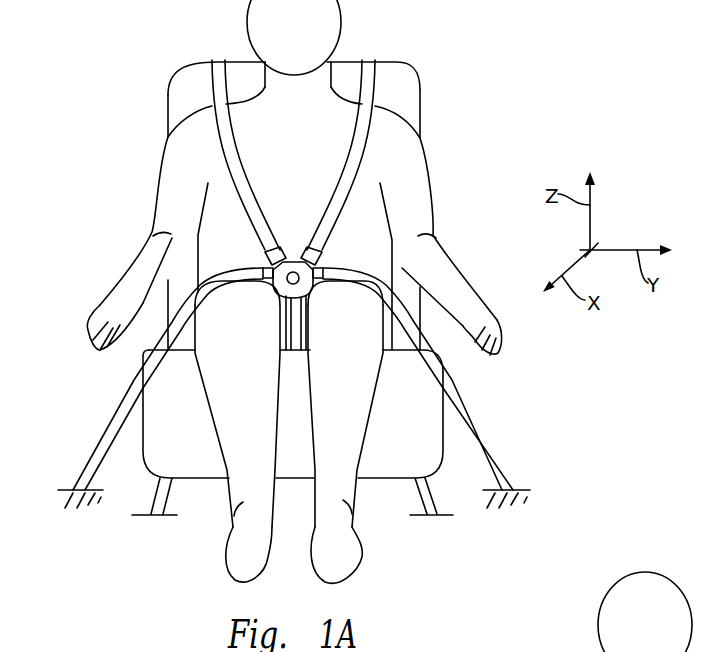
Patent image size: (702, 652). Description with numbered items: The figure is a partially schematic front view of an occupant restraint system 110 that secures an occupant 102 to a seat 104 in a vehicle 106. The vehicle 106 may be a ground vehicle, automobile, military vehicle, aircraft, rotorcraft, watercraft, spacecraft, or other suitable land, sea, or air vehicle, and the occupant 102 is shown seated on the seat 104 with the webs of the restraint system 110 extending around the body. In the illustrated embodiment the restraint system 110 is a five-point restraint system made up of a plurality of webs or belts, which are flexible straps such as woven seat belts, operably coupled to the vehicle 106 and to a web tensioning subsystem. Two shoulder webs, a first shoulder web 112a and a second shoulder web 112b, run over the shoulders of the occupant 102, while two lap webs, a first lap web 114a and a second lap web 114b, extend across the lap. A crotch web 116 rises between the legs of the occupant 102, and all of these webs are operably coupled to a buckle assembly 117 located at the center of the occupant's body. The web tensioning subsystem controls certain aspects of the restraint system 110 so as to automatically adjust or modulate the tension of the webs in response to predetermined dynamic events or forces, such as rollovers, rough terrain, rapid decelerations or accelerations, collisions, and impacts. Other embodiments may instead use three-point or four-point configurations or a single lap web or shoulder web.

The occupant 102 is at (370, 410).
The seat 104 is at (440, 463).
The vehicle 106 is at (443, 586).
The occupant restraint system 110 is at (402, 98).
The first shoulder web 112a is at (356, 206).
The second shoulder web 112b is at (247, 221).
The first lap web 114a is at (407, 308).
The second lap web 114b is at (162, 345).
The crotch web 116 is at (290, 328).
The buckle assembly 117 is at (288, 281).